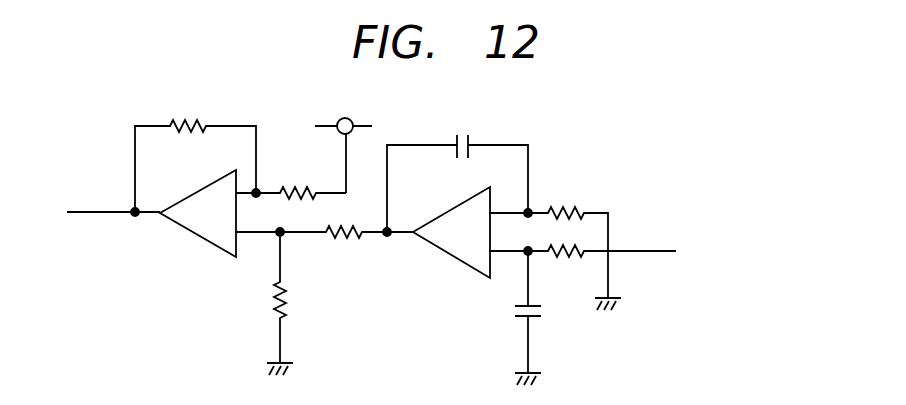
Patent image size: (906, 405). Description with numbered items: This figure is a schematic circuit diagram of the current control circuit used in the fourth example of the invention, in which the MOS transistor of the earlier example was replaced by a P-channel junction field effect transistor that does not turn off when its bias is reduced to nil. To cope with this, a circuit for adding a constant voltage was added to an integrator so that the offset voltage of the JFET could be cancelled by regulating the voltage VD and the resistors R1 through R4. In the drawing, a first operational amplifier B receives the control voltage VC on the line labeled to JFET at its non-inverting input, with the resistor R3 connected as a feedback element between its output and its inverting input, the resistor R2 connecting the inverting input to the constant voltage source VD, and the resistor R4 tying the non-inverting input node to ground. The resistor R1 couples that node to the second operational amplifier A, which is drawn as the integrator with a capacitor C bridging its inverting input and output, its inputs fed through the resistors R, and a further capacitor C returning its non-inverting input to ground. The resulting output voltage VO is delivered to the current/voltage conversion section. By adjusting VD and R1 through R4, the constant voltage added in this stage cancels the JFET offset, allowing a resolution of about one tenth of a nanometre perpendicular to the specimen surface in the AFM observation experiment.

The resistor R1 is at (324, 248).
The resistor R2 is at (291, 180).
The resistor R3 is at (195, 153).
The resistor R4 is at (267, 303).
The resistors R is at (583, 244).
The capacitors C is at (464, 245).
The operational amplifier A is at (451, 232).
The operational amplifier B is at (198, 213).
The constant voltage VD is at (343, 145).
The control voltage VC to JFET VC is at (96, 213).
The output voltage VO to current/voltage conversion section VO is at (749, 241).